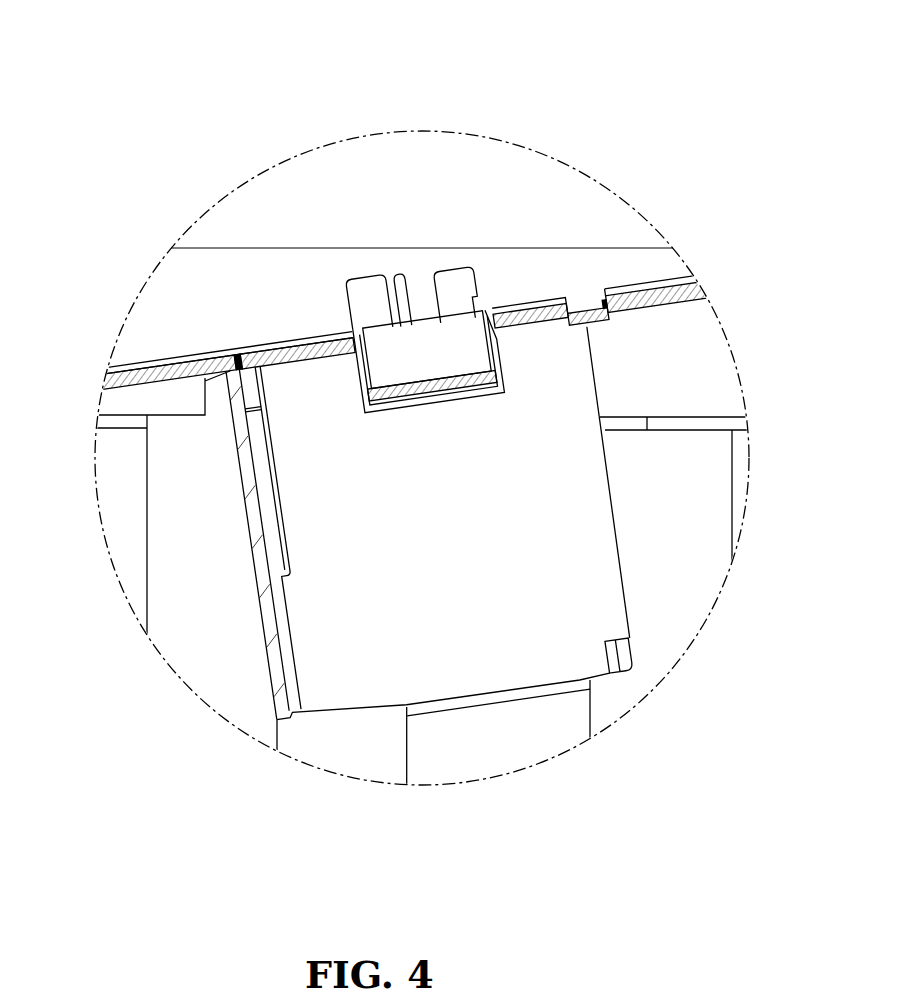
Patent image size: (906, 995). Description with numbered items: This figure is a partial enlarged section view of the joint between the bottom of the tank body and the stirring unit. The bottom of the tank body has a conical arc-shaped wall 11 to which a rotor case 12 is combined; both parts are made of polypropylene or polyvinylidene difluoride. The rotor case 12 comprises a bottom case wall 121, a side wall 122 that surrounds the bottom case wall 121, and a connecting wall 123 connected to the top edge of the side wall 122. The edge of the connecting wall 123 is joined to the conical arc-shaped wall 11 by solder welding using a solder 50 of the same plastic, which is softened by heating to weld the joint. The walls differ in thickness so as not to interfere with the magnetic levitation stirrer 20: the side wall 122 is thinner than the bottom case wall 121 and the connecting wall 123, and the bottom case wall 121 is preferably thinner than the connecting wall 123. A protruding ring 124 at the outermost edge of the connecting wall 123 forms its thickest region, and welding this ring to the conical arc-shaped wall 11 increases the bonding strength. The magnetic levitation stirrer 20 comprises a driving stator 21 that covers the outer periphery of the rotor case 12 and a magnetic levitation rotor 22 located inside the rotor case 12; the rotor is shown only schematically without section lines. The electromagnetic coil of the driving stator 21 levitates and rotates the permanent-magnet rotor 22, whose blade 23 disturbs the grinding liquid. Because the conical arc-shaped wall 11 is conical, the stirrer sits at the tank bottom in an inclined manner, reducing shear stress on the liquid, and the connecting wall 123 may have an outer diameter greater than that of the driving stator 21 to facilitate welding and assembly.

The conical arc-shaped wall 11 is at (657, 303).
The rotor case 12 is at (717, 75).
The bottom case wall 121 is at (453, 372).
The side wall 122 is at (500, 345).
The connecting wall 123 is at (563, 307).
The protruding ring 124 is at (600, 298).
The magnetic levitation stirrer 20 is at (212, 77).
The driving stator 21 is at (320, 395).
The magnetic levitation rotor 22 is at (400, 348).
The blade 23 is at (373, 302).
The solder 50 is at (608, 312).